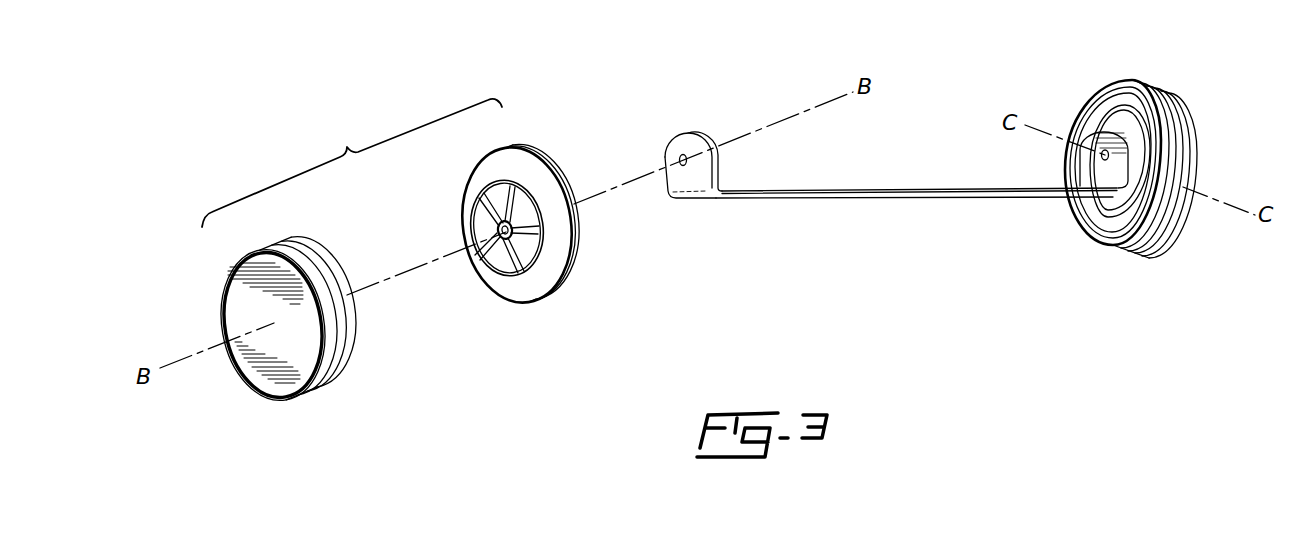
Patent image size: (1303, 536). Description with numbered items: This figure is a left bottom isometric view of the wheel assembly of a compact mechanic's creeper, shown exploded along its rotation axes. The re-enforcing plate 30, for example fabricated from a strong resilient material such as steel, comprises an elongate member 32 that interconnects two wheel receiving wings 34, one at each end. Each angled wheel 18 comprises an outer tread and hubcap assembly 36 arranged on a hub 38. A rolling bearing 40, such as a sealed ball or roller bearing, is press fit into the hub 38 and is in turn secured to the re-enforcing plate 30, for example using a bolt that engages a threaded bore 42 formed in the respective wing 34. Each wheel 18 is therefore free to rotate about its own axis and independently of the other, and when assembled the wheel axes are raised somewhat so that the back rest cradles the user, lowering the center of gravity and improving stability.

The angled wheel 18 is at (1157, 88).
The re-enforcing plate 30 is at (863, 157).
The elongate member 32 is at (895, 189).
The wheel receiving wing 34 is at (718, 175).
The outer tread and hubcap assembly 36 is at (277, 382).
The hub 38 is at (518, 275).
The rolling bearing 40 is at (503, 265).
The threaded bore 42 is at (680, 157).